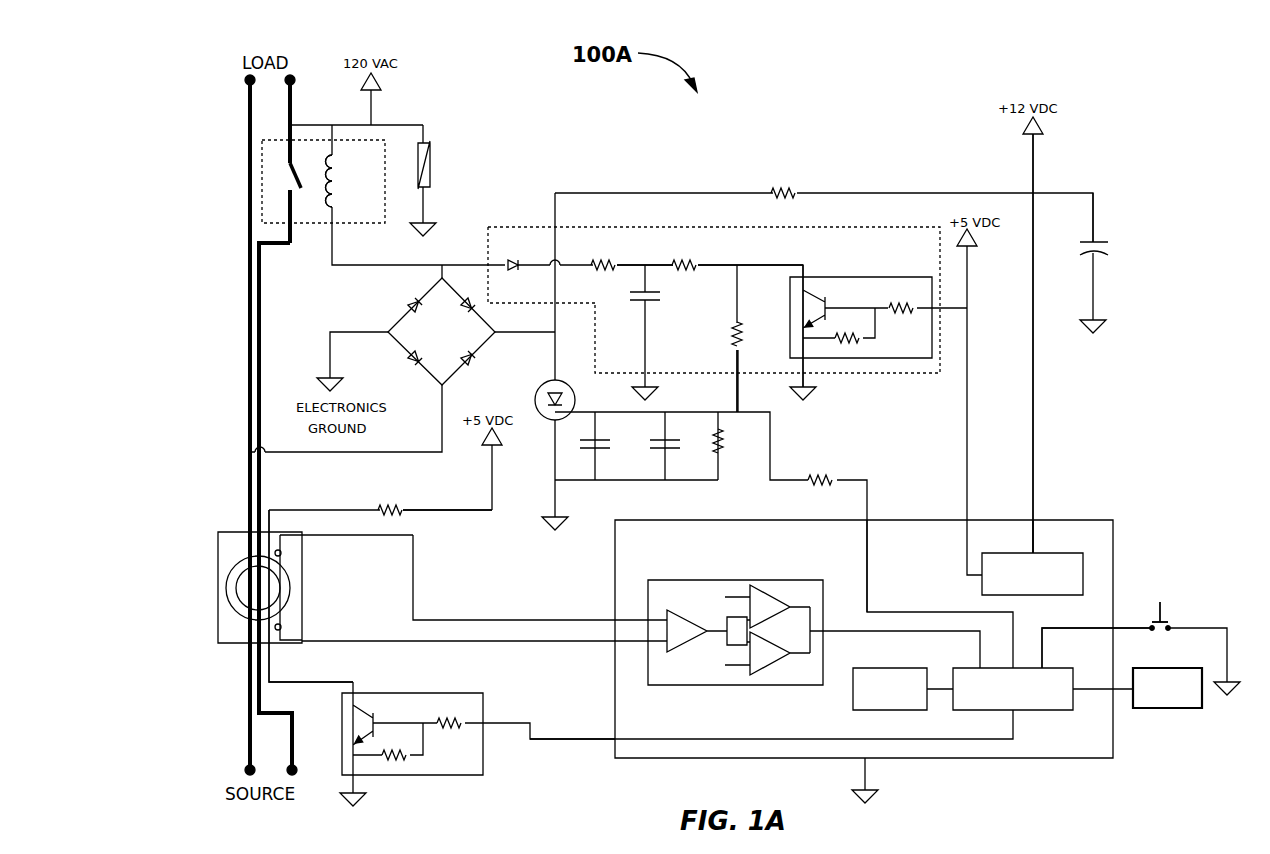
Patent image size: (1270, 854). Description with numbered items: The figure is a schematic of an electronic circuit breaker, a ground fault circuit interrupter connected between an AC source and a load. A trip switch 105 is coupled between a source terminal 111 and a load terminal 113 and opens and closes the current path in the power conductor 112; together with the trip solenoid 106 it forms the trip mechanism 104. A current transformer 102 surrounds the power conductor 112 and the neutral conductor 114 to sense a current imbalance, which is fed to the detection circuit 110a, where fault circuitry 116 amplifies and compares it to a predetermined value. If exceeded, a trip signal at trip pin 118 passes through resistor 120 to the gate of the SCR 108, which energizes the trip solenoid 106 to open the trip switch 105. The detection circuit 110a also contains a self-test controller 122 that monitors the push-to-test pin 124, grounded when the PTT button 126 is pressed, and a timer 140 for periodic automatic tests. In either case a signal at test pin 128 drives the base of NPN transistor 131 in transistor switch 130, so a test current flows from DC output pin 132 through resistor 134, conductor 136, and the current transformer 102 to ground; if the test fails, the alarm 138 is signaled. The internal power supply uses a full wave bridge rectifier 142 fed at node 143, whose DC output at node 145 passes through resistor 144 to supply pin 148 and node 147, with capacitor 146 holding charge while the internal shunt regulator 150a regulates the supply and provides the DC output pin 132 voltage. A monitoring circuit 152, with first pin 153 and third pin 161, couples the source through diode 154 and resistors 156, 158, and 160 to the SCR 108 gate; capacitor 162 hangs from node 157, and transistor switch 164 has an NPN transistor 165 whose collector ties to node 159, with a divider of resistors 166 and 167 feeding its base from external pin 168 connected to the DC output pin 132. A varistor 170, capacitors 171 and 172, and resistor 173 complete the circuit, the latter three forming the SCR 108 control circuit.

The current transformer 102 is at (302, 568).
The trip mechanism 104 is at (348, 225).
The trip switch 105 is at (290, 174).
The trip solenoid 106 is at (324, 172).
The SCR 108 is at (538, 388).
The detection circuit 110a is at (615, 570).
The source terminal 111 is at (320, 763).
The power conductor 112 is at (264, 296).
The load terminal 113 is at (292, 77).
The neutral conductor 114 is at (247, 296).
The fault circuitry 116 is at (718, 579).
The trip pin 118 is at (867, 518).
The resistor 120 is at (823, 477).
The self-test controller 122 is at (1032, 710).
The push-to-test pin 124 is at (1113, 625).
The push-to-test button 126 is at (1157, 610).
The test pin 128 is at (614, 738).
The transistor switch 130 is at (392, 693).
The NPN transistor 131 is at (352, 717).
The DC output pin 132 is at (968, 518).
The resistor 134 is at (387, 505).
The conductor 136 is at (442, 515).
The alarm 138 is at (1148, 711).
The timer 140 is at (915, 665).
The full wave bridge rectifier 142 is at (459, 342).
The node 143 is at (438, 270).
The resistor 144 is at (778, 188).
The node 145 is at (552, 337).
The capacitor 146 is at (1090, 240).
The node 147 is at (1033, 190).
The supply pin 148 is at (1035, 518).
The internal shunt regulator 150a is at (1085, 563).
The monitoring circuit 152 is at (847, 225).
The first pin 153 is at (488, 263).
The diode 154 is at (505, 272).
The resistor 156 is at (605, 258).
The node 157 is at (640, 273).
The resistor 158 is at (697, 258).
The node 159 is at (735, 273).
The resistor 160 is at (733, 350).
The third pin 161 is at (737, 380).
The capacitor 162 is at (657, 302).
The transistor switch 164 is at (840, 277).
The NPN transistor 165 is at (807, 297).
The resistor 166 is at (893, 302).
The resistor 167 is at (853, 343).
The external pin 168 is at (930, 307).
The varistor 170 is at (430, 173).
The capacitor 171 is at (603, 448).
The capacitor 172 is at (670, 448).
The resistor 173 is at (720, 452).